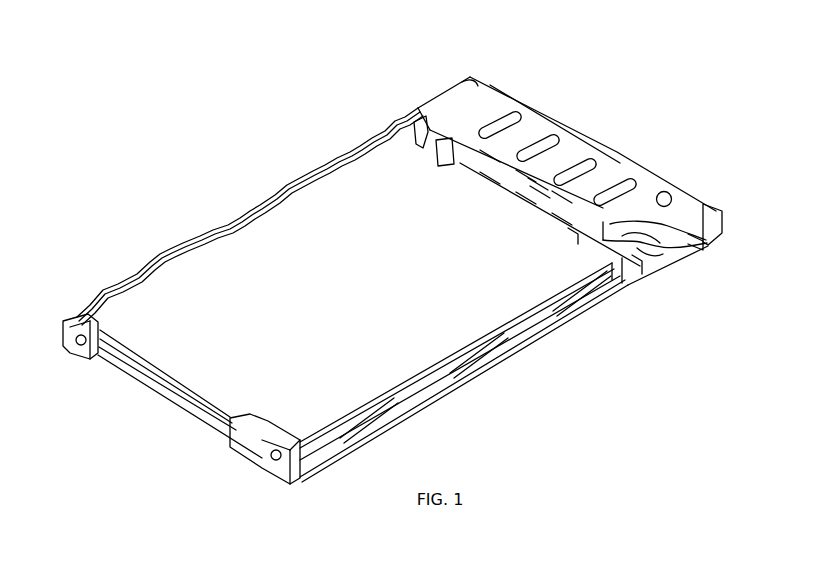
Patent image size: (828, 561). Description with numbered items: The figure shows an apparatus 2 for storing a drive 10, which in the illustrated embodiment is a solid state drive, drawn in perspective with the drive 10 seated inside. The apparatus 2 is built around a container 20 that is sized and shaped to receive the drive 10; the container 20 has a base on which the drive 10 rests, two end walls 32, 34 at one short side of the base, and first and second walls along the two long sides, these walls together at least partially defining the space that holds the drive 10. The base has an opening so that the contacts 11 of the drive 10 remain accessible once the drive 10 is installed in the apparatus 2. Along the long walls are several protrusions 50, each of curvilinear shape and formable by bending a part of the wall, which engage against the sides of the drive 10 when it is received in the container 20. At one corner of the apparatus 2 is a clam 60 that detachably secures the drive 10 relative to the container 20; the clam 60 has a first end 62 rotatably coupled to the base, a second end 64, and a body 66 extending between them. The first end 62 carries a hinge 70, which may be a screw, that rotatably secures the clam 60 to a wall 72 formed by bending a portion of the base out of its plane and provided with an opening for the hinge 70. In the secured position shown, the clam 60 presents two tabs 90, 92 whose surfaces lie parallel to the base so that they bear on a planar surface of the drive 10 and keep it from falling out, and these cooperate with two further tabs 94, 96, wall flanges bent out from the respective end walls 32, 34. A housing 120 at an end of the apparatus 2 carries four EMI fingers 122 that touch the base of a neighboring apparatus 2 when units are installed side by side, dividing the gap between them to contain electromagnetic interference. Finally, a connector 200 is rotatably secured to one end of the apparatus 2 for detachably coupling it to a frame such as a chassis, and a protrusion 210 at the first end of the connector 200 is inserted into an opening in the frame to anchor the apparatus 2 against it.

The apparatus 2 is at (680, 53).
The drive 10 is at (393, 173).
The contacts 11 is at (160, 383).
The container 20 is at (430, 398).
The end wall 32 is at (70, 352).
The end wall 34 is at (257, 455).
The protrusion 50 is at (135, 278).
The clam 60 is at (605, 224).
The first end 62 is at (430, 128).
The second end 64 is at (638, 260).
The body 66 is at (542, 182).
The hinge 70 is at (447, 140).
The wall 72 is at (421, 146).
The tab 90 is at (537, 184).
The tab 92 is at (578, 232).
The tab 94 is at (87, 320).
The tab 96 is at (267, 429).
The housing 120 is at (630, 163).
The EMI finger 122 is at (462, 162).
The connector 200 is at (723, 218).
The protrusion 210 is at (709, 238).